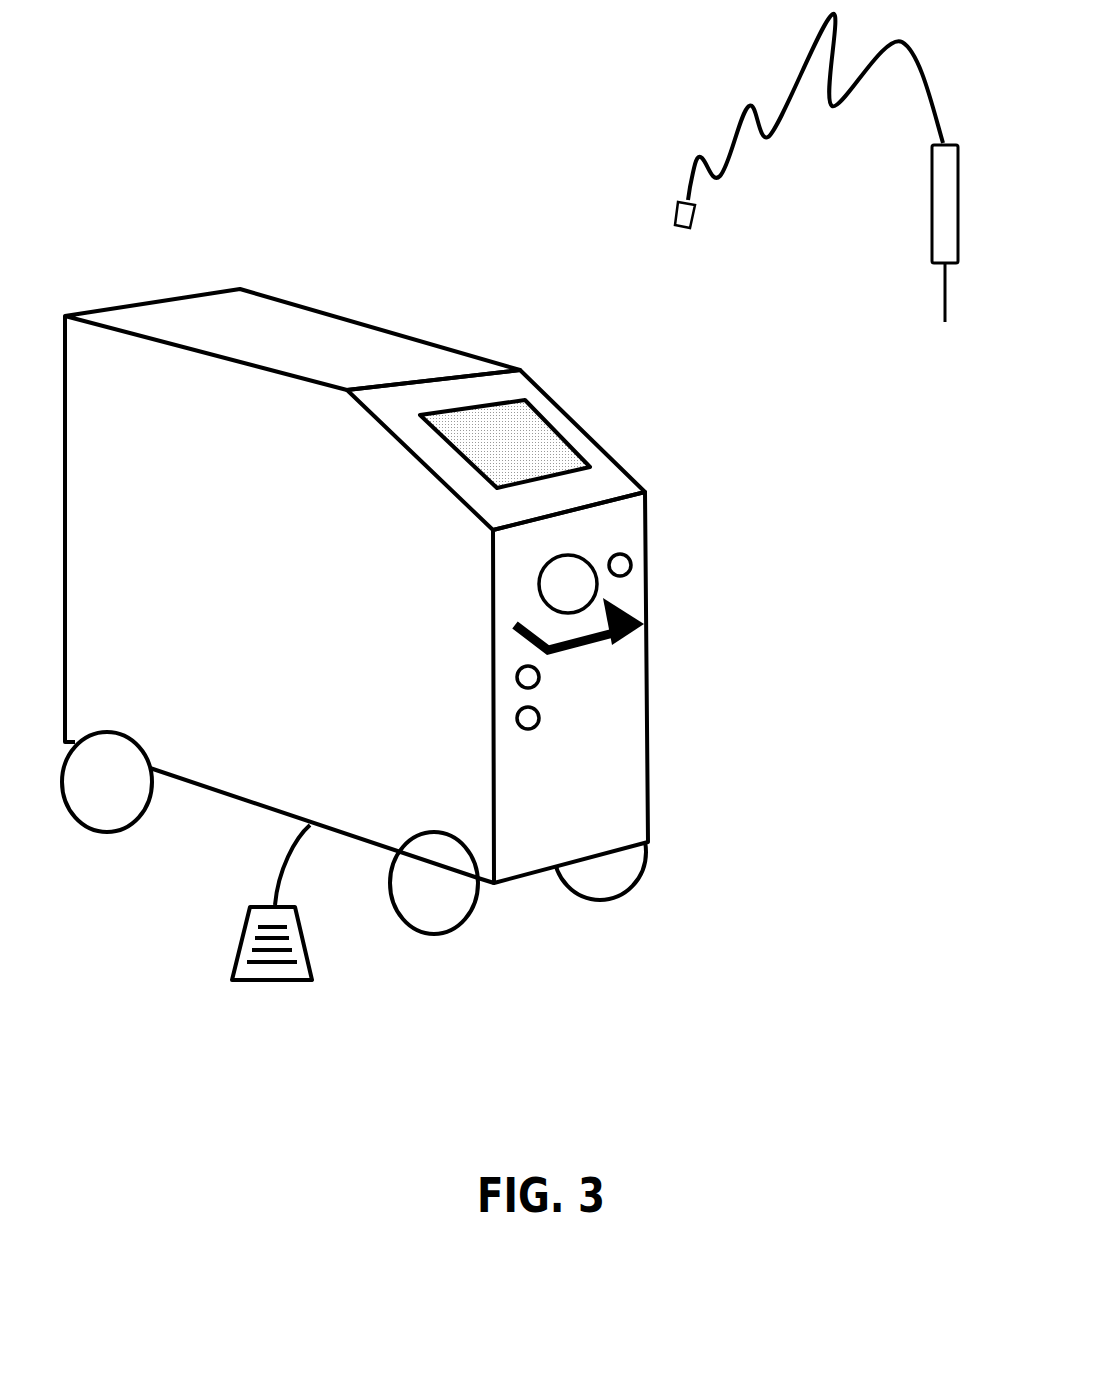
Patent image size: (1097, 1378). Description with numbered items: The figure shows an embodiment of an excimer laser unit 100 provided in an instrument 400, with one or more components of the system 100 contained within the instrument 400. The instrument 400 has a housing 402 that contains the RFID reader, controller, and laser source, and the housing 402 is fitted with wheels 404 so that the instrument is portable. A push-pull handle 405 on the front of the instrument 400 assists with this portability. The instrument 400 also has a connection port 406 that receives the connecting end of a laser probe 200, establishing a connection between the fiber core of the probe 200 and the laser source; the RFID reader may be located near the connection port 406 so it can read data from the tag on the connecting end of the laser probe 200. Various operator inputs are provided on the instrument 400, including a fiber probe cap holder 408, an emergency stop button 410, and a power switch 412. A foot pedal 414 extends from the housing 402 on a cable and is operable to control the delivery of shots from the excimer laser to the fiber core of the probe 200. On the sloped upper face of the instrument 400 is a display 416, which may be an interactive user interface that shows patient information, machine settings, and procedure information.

The excimer laser unit 100 is at (199, 206).
The laser probe 200 is at (693, 85).
The instrument 400 is at (367, 310).
The housing 402 is at (167, 323).
The wheels 404 is at (435, 910).
The push-pull handle 405 is at (645, 625).
The connection port 406 is at (575, 582).
The fiber probe cap holder 408 is at (622, 563).
The emergency stop button 410 is at (529, 674).
The power switch 412 is at (530, 718).
The foot pedal 414 is at (235, 947).
The display 416 is at (520, 430).